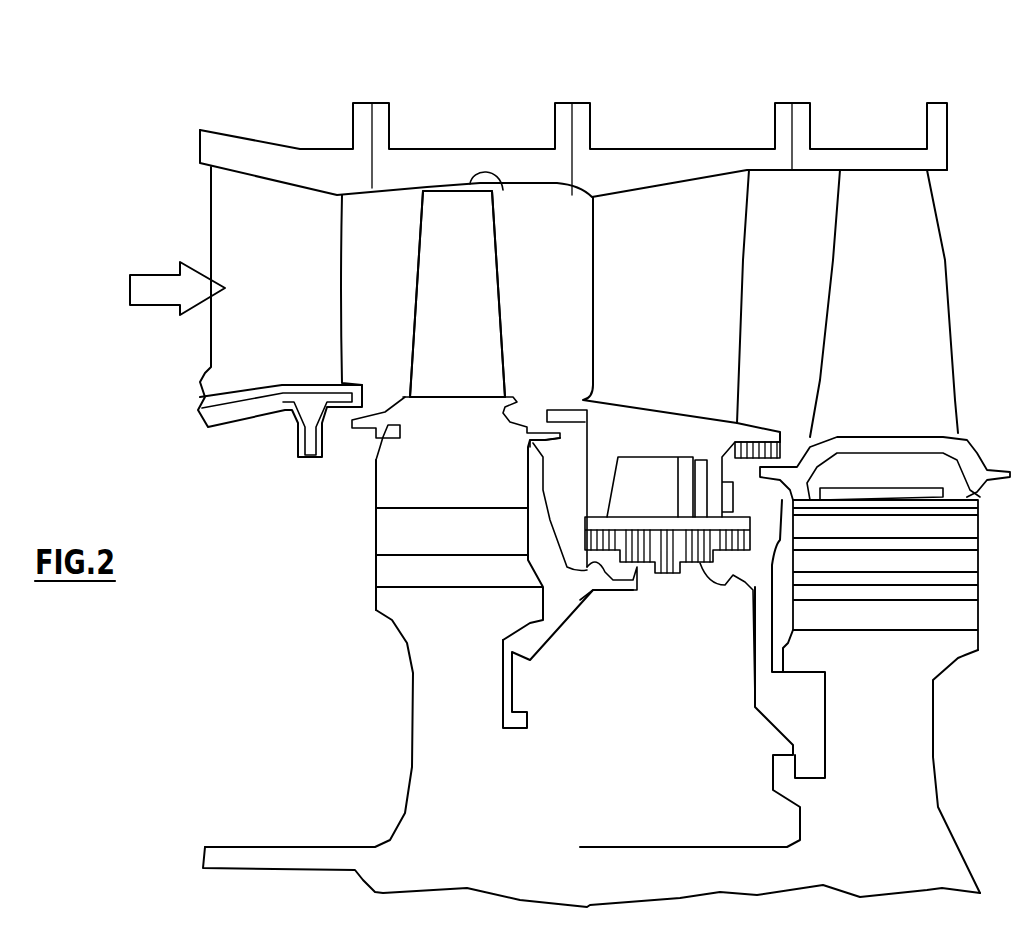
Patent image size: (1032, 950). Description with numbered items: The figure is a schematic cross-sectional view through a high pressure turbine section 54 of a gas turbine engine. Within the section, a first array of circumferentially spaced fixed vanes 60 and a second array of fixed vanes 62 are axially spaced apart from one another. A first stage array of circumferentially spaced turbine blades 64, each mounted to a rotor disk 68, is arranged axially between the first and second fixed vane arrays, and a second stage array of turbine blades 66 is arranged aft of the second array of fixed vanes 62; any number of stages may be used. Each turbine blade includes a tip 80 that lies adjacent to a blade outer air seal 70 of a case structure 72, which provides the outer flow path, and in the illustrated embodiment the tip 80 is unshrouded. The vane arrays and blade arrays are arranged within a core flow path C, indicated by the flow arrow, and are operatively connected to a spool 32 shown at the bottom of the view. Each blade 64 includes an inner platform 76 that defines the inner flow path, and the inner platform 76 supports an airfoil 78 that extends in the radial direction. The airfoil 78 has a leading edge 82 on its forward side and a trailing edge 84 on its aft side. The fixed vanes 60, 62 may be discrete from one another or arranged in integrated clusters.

The high pressure turbine section 54 is at (703, 76).
The blade outer air seal 70 is at (404, 168).
The case structure 72 is at (563, 127).
The first array of fixed vanes 60 is at (197, 248).
The core flow path C is at (158, 298).
The first stage turbine blade 64 is at (408, 262).
The airfoil 78 is at (496, 300).
The leading edge 82 is at (414, 322).
The trailing edge 84 is at (502, 342).
The tip 80 is at (503, 190).
The second array of fixed vanes 62 is at (590, 237).
The inner platform 76 is at (462, 400).
The rotor disk 68 is at (490, 782).
The spool 32 is at (196, 851).
The second stage turbine blade 66 is at (814, 275).